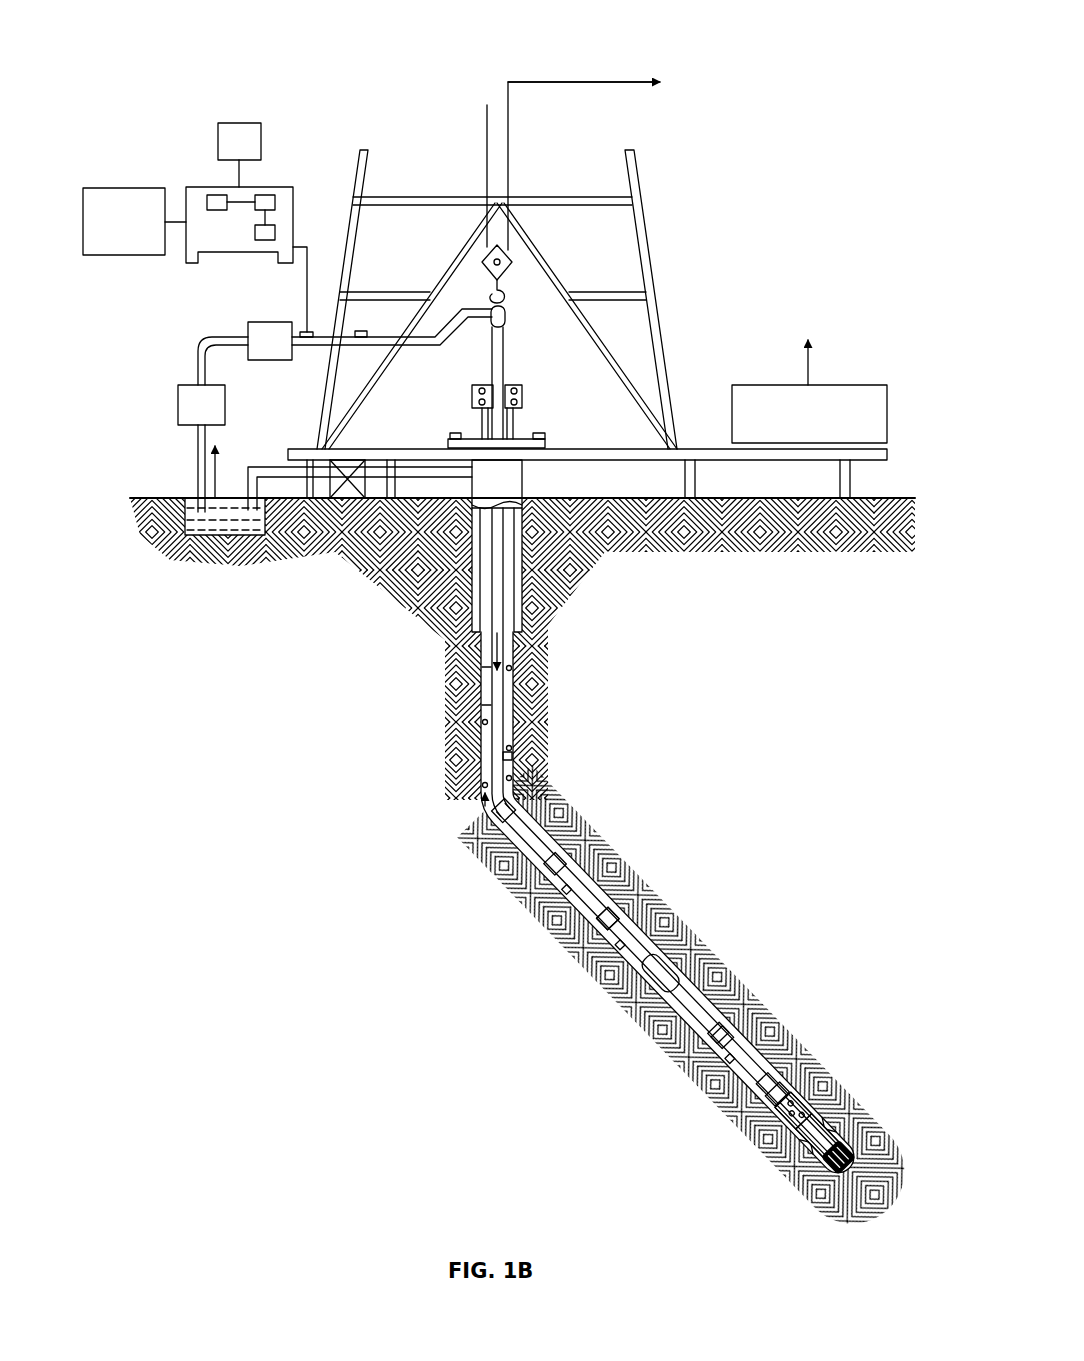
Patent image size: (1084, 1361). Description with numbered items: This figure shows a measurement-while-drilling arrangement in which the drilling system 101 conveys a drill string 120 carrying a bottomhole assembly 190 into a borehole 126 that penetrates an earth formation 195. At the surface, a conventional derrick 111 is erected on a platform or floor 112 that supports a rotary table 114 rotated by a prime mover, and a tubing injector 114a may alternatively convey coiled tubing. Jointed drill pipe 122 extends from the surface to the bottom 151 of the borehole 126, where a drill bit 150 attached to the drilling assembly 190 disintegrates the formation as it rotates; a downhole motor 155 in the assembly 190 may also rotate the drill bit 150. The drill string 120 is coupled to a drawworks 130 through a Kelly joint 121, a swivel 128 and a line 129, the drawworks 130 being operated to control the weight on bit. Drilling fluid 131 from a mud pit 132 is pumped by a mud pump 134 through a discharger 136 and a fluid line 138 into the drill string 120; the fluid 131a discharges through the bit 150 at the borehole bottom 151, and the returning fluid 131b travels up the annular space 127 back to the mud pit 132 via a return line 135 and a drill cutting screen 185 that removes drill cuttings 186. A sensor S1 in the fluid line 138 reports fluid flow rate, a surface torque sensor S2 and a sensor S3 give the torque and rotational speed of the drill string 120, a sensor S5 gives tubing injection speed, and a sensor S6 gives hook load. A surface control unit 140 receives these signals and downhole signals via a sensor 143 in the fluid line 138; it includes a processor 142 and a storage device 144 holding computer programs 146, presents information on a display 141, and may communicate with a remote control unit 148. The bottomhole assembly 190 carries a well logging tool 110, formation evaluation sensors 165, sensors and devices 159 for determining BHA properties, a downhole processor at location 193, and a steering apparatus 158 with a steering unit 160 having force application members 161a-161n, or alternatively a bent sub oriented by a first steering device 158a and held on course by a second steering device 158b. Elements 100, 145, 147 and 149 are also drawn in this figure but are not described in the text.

The bottom hole assembly 100 is at (757, 1020).
The drilling system 101 is at (825, 45).
The well logging tool 110 is at (165, 45).
The derrick 111 is at (660, 310).
The platform or floor 112 is at (680, 448).
The rotary table 114 is at (535, 437).
The tubing injector 114a is at (525, 393).
The drill string 120 is at (509, 725).
The Kelly joint 121 is at (508, 372).
The jointed drill pipe 122 is at (483, 707).
The borehole 126 is at (514, 790).
The annular space 127 is at (556, 818).
The swivel 128 is at (490, 322).
The line 129 is at (510, 172).
The drawworks 130 is at (845, 385).
The drilling fluid 131 is at (190, 530).
The discharging drilling fluid 131a is at (485, 650).
The returning drilling fluid 131b is at (487, 808).
The mud pit 132 is at (208, 507).
The mud pump 134 is at (178, 407).
The return line 135 is at (417, 478).
The discharger 136 is at (247, 335).
The fluid line 138 is at (327, 352).
The surface control unit 140 is at (223, 187).
The display/monitor 141 is at (240, 123).
The processor 142 is at (215, 194).
The sensor 143 is at (307, 330).
The storage device 144 is at (268, 194).
The wellhead 145 is at (546, 440).
The computer programs 146 is at (263, 241).
The drive unit 147 is at (455, 392).
The remote control unit 148 is at (145, 187).
The casing 149 is at (525, 488).
The drill bit 150 is at (855, 1130).
The borehole bottom 151 is at (803, 1183).
The downhole motor 155 is at (612, 880).
The steering apparatus 158 is at (815, 1105).
The first steering device 158a is at (790, 1172).
The second steering device 158b is at (790, 1152).
The sensors and devices 159 is at (840, 1112).
The steering unit 160 is at (770, 1130).
The force application members 161a-161n is at (790, 1112).
The formation evaluation sensors 165 is at (700, 1060).
The drill cutting screen 185 is at (342, 448).
The drill cuttings 186 is at (511, 668).
The bottomhole assembly 190 is at (722, 880).
The downhole processor location 193 is at (640, 1005).
The earth formation 195 is at (828, 945).
The flow rate sensor S1 is at (362, 330).
The surface torque sensor S2 is at (565, 470).
The rotational speed sensor S3 is at (455, 436).
The tubing injection speed sensor S5 is at (507, 338).
The hook load sensor S6 is at (505, 298).